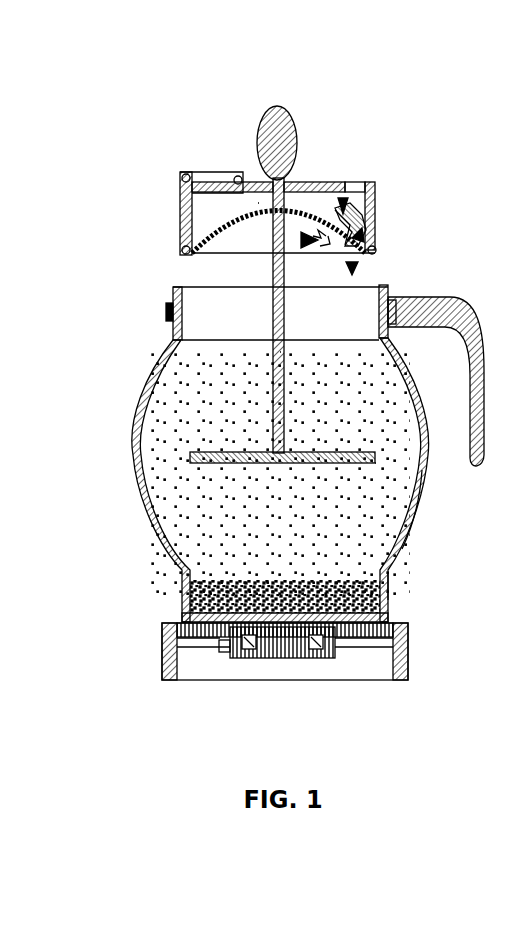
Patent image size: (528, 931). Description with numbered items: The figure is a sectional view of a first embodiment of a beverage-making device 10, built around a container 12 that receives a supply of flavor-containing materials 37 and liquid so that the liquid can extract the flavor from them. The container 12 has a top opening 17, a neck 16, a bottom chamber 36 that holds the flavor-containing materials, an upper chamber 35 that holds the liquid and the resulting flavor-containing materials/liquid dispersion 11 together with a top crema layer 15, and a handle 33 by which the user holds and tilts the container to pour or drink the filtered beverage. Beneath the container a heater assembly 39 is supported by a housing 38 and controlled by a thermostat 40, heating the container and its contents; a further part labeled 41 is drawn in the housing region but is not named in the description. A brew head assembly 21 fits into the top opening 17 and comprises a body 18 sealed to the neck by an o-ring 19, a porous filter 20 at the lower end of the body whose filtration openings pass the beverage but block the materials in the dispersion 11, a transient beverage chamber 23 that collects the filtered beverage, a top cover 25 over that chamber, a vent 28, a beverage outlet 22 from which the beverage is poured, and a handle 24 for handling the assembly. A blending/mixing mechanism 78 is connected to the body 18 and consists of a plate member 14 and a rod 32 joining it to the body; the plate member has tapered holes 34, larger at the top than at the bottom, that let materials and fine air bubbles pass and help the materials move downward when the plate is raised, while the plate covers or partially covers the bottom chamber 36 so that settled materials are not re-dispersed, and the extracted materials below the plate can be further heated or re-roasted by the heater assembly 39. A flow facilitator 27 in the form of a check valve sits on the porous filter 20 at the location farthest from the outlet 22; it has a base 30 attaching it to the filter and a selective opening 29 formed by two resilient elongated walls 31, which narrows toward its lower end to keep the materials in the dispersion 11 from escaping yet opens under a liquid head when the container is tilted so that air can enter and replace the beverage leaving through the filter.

The beverage-making device 10 is at (438, 126).
The flavor-containing materials/liquid dispersion 11 is at (180, 518).
The container 12 is at (270, 488).
The plate member 14 is at (190, 460).
The top crema layer 15 is at (162, 380).
The neck 16 is at (176, 334).
The top opening 17 is at (168, 310).
The body 18 is at (182, 221).
The o-ring 19 is at (183, 251).
The porous filter 20 is at (226, 218).
The brew head assembly 21 is at (275, 190).
The beverage outlet 22 is at (204, 180).
The transient beverage chamber 23 is at (258, 203).
The handle 24 is at (272, 108).
The top cover 25 is at (322, 182).
The flow facilitator 27 is at (344, 180).
The vent 28 is at (357, 180).
The selective opening 29 is at (352, 216).
The base 30 is at (372, 228).
The resilient elongated walls 31 is at (376, 252).
The rod 32 is at (300, 347).
The handle 33 is at (468, 395).
The holes 34 is at (376, 464).
The upper chamber 35 is at (402, 546).
The bottom chamber 36 is at (386, 578).
The flavor-containing materials 37 is at (388, 614).
The housing 38 is at (395, 662).
The heater assembly 39 is at (297, 660).
The thermostat 40 is at (221, 655).
The heating plate 41 is at (183, 617).
The blending/mixing mechanism 78 is at (262, 348).